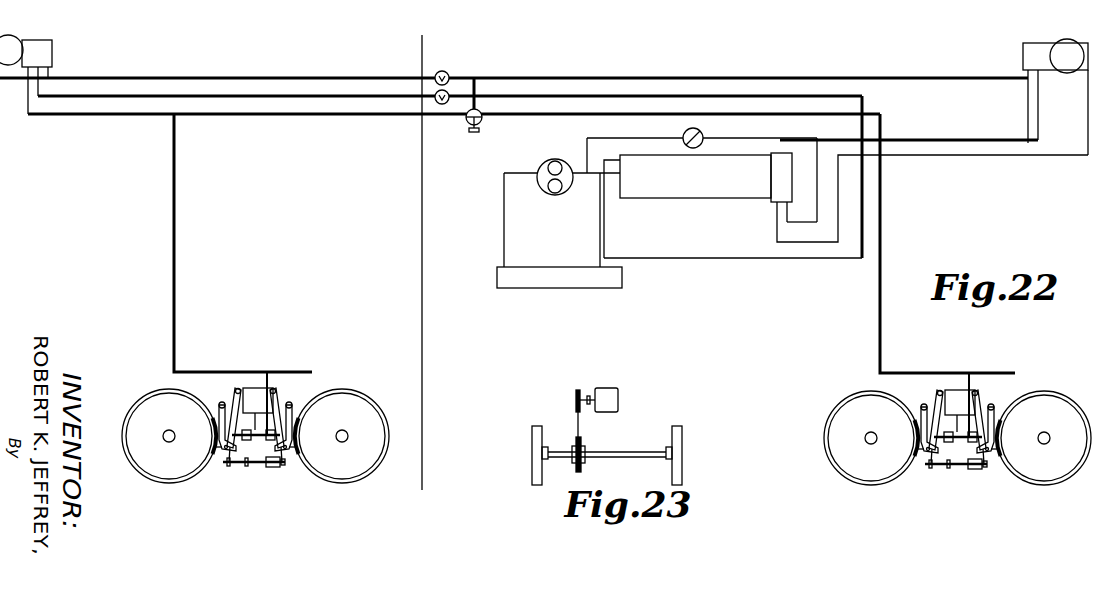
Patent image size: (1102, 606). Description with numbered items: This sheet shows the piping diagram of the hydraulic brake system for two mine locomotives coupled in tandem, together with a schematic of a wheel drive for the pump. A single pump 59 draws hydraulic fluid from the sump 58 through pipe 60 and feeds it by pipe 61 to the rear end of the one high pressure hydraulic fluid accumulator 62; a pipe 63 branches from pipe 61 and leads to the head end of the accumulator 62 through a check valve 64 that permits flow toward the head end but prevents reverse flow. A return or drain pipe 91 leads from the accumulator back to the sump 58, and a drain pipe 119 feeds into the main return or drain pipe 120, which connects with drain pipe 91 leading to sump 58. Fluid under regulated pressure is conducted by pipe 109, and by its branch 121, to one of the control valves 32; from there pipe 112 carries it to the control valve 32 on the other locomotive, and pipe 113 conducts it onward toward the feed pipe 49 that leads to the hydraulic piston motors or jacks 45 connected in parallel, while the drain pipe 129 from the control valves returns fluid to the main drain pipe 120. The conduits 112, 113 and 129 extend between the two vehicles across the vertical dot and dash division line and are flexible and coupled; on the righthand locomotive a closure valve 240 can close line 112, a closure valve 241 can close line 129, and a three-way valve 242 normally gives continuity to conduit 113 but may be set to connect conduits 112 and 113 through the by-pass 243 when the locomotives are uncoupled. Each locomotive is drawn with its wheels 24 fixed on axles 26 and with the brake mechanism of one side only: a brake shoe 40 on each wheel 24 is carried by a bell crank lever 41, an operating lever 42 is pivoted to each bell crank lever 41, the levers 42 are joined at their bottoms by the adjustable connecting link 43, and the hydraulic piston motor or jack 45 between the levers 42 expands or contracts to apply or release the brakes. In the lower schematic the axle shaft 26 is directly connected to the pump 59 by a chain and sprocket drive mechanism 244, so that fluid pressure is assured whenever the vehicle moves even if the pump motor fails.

In FIG. 22, the control valve 32 is at (61, 38).
In FIG. 22, the pipe 112 is at (190, 76).
In FIG. 22, the drain pipe 129 is at (318, 94).
In FIG. 22, the pipe 113 is at (380, 117).
In FIG. 22, the closure valve 240 is at (446, 72).
In FIG. 22, the closure valve 241 is at (450, 93).
In FIG. 22, the by-pass 243 is at (478, 98).
In FIG. 22, the three-way valve 242 is at (470, 126).
In FIG. 22, the pump 59 is at (547, 161).
In FIG. 23, the pump 59 is at (608, 389).
In FIG. 22, the pipe 60 is at (504, 220).
In FIG. 22, the pipe 61 is at (597, 178).
In FIG. 22, the return or drain pipe 91 is at (607, 238).
In FIG. 22, the high pressure hydraulic fluid accumulator 62 is at (733, 194).
In FIG. 22, the check valve 64 is at (704, 136).
In FIG. 22, the pipe 63 is at (781, 137).
In FIG. 22, the drain pipe 119 is at (790, 212).
In FIG. 22, the main return or drain pipe 120 is at (717, 260).
In FIG. 22, the sump 58 is at (622, 285).
In FIG. 22, the pipe 109 is at (925, 158).
In FIG. 22, the branch 121 is at (1052, 158).
In FIG. 22, the feed pipe 49 is at (178, 318).
In FIG. 22, the wheel 24 is at (606, 437).
In FIG. 23, the wheel 24 is at (535, 440).
In FIG. 22, the axle 26 is at (166, 443).
In FIG. 23, the axle 26 is at (627, 451).
In FIG. 22, the operating lever 42 is at (237, 390).
In FIG. 22, the bell crank lever 41 is at (219, 402).
In FIG. 22, the brake shoe 40 is at (213, 460).
In FIG. 22, the adjustable connecting link 43 is at (248, 466).
In FIG. 22, the hydraulic piston motor or jack 45 is at (255, 440).
In FIG. 23, the chain and sprocket drive mechanism 244 is at (576, 420).